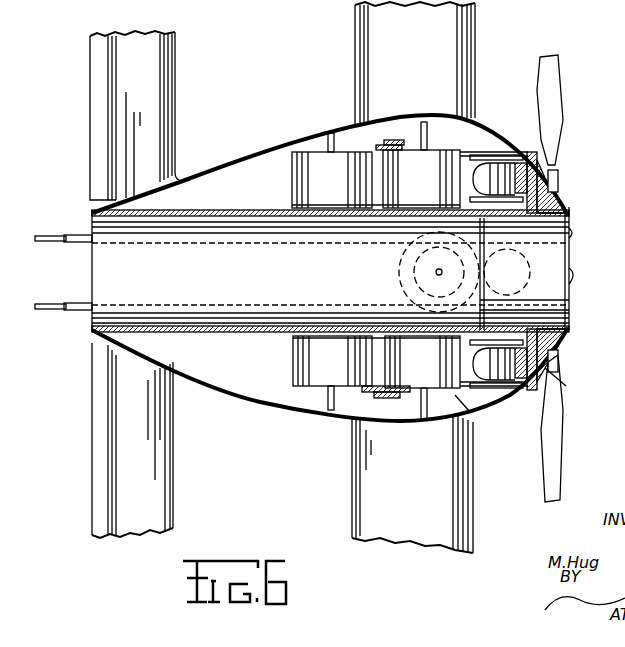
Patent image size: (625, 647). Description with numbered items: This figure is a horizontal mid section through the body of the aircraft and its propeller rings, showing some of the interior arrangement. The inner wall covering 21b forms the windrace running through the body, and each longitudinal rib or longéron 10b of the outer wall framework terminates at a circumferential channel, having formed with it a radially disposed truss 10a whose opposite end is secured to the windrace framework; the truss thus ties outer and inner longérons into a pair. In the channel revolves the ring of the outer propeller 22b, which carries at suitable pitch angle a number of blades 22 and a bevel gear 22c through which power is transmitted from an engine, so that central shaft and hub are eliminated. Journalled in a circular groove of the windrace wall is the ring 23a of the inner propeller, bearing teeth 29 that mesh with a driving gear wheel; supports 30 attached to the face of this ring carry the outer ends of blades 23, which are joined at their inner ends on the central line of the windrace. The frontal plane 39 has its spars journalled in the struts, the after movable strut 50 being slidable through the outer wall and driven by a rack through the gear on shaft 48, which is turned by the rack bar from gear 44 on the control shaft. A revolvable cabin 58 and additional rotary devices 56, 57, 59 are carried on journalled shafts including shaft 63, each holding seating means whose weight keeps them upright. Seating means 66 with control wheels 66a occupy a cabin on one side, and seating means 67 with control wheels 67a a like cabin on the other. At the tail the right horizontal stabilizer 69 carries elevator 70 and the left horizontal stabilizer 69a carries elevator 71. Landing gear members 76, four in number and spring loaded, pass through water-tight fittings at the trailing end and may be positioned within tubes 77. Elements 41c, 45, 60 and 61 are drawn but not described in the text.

The radially disposed support or truss 10a is at (530, 330).
The longitudinal rib or longéron 10b is at (246, 396).
The covering of the inner wall 21b is at (330, 271).
The aerofoils or blades 22 is at (570, 195).
The outer propeller 22b is at (569, 361).
The bevel gear 22c is at (568, 208).
The aerofoils or blades 23 is at (569, 240).
The ring of the inner propeller 23a is at (596, 262).
The teeth 29 is at (507, 272).
The supports 30 is at (569, 314).
The frontal plane 39 is at (462, 48).
The housing wall 41c is at (222, 211).
The gear 44 is at (557, 103).
The connecting rod 45 is at (480, 152).
The shaft 48 is at (384, 145).
The movable strut 50 is at (395, 140).
The rotary device 56 is at (540, 168).
The rotary device 57 is at (294, 154).
The revolvable cabin or device 58 is at (455, 396).
The rotary device 59 is at (310, 373).
The strut 60 is at (427, 130).
The strut 61 is at (316, 134).
The shaft 63 is at (332, 398).
The seating means 66 is at (525, 176).
The control wheels 66a is at (478, 176).
The seating means 67 is at (497, 353).
The control wheels 67a is at (515, 365).
The right horizontal stabilizer 69 is at (163, 466).
The left horizontal stabilizer 69a is at (173, 98).
The elevator 70 is at (97, 455).
The elevator 71 is at (97, 123).
The landing gear member 76 is at (40, 238).
The tubes 77 is at (67, 236).